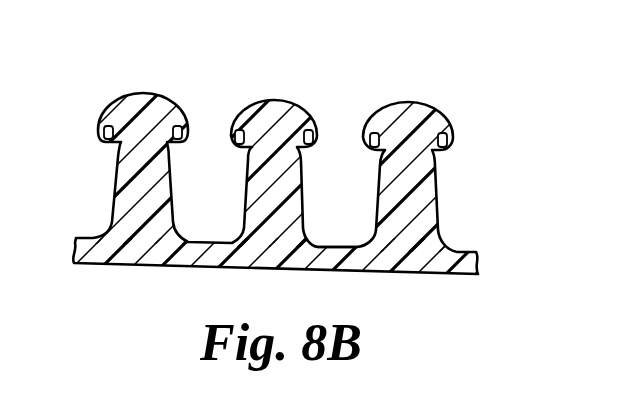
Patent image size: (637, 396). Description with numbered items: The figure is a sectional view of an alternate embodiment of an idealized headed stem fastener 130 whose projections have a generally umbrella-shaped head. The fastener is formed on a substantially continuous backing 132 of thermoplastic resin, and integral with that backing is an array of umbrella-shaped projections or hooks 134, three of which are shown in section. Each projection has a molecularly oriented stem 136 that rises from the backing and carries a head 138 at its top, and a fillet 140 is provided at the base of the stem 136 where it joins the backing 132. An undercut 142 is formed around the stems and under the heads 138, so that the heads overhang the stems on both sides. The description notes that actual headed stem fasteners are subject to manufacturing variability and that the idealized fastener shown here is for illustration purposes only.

The headed stem fastener 130 is at (279, 184).
The backing 132 is at (121, 257).
The projection or hook 134 is at (118, 149).
The stem 136 is at (112, 196).
The head 138 is at (185, 112).
The fillet 140 is at (368, 237).
The undercut 142 is at (106, 140).